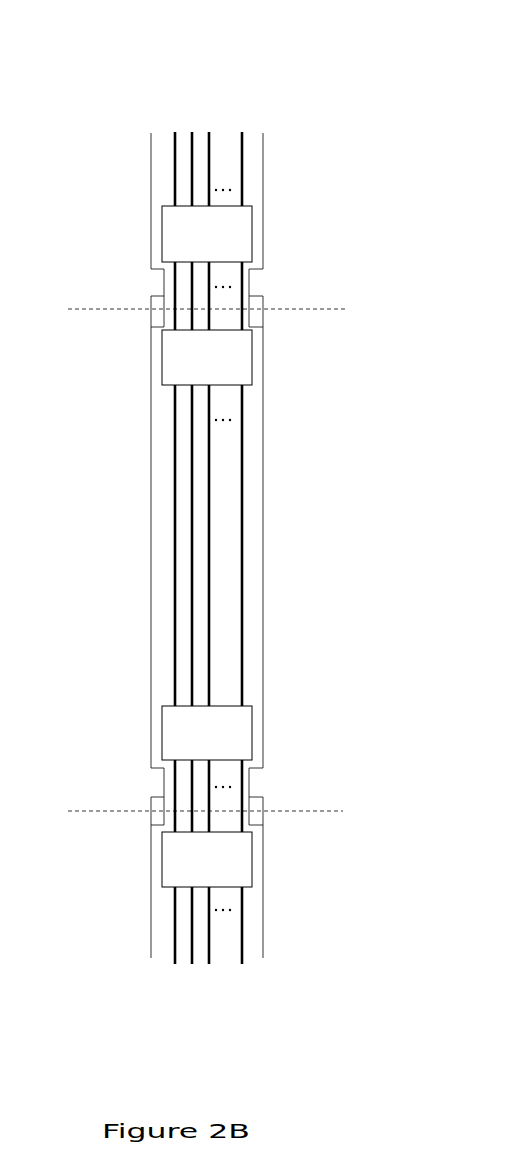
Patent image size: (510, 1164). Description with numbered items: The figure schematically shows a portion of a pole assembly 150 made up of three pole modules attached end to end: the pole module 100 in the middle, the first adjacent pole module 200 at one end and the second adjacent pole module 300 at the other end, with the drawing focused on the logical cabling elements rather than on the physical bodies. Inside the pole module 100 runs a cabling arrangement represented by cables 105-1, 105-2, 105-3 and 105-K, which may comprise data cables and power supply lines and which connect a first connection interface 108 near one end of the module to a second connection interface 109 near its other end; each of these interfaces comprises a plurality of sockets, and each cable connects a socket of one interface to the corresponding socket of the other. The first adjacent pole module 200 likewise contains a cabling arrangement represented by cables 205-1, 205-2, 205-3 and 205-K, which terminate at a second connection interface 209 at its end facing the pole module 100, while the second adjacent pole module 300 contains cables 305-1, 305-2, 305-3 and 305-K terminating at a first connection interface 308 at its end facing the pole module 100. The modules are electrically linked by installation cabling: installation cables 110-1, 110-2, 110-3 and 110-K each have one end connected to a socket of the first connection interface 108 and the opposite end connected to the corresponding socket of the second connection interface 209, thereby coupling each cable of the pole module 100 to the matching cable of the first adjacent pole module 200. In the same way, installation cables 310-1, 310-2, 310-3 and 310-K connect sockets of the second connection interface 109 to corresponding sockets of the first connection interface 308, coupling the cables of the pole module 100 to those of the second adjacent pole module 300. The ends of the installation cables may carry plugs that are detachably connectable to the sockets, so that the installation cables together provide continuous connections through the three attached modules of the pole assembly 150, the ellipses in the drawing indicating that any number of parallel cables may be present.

The pole assembly 150 is at (229, 30).
The second adjacent pole module 300 is at (120, 163).
The pole module 100 is at (112, 456).
The first adjacent pole module 200 is at (112, 901).
The cable 305-1 is at (175, 135).
The cable 305-2 is at (192, 140).
The cable 305-3 is at (209, 150).
The cable 305-K is at (242, 167).
The first connection interface 308 is at (252, 218).
The installation cable 310-1 is at (164, 277).
The installation cable 310-2 is at (192, 288).
The installation cable 310-3 is at (209, 283).
The installation cable 310-K is at (249, 290).
The second connection interface 109 is at (252, 355).
The cable 105-1 is at (175, 480).
The cable 105-2 is at (192, 507).
The cable 105-3 is at (209, 537).
The cable 105-K is at (242, 525).
The first connection interface 108 is at (252, 722).
The installation cable 110-1 is at (164, 777).
The installation cable 110-2 is at (192, 785).
The installation cable 110-3 is at (209, 793).
The installation cable 110-K is at (249, 785).
The second connection interface 209 is at (252, 870).
The cable 205-1 is at (175, 962).
The cable 205-2 is at (192, 962).
The cable 205-3 is at (209, 952).
The cable 205-K is at (242, 934).